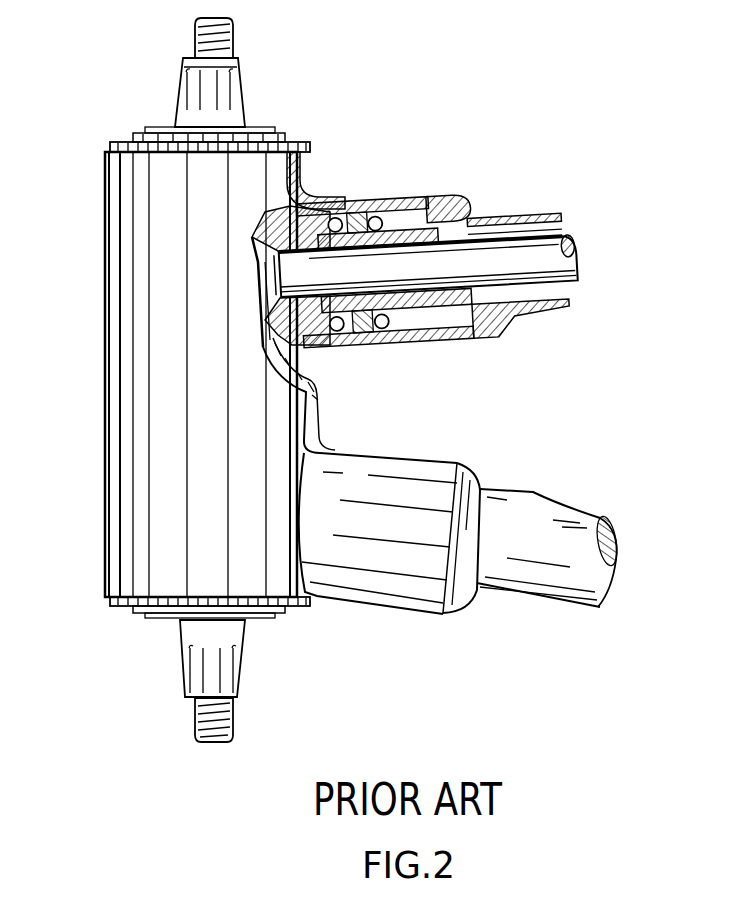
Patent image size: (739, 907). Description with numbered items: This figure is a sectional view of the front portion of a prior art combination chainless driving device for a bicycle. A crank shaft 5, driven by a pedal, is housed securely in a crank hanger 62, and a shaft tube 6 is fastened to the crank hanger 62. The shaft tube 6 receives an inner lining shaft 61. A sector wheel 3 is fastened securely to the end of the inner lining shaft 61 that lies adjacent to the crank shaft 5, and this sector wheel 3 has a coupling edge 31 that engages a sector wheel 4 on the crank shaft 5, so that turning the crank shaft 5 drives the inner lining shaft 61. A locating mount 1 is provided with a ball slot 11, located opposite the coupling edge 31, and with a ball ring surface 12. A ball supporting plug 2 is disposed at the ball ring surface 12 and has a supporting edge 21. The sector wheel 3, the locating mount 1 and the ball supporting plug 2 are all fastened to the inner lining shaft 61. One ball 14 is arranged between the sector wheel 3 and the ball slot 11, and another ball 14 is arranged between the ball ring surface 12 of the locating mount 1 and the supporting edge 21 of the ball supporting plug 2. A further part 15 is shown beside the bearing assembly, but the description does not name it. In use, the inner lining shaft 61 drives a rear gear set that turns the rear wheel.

The locating mount 1 is at (377, 350).
The ball slot 11 is at (350, 352).
The ball ring surface 12 is at (390, 205).
The ball 14 is at (380, 203).
The lock nut 15 is at (463, 203).
The ball supporting plug 2 is at (417, 350).
The supporting edge 21 is at (400, 352).
The sector wheel 3 is at (335, 198).
The coupling edge 31 is at (347, 352).
The sector wheel 4 is at (317, 183).
The crank shaft 5 is at (232, 78).
The shaft tube 6 is at (537, 227).
The inner lining shaft 61 is at (567, 233).
The crank hanger 62 is at (115, 448).